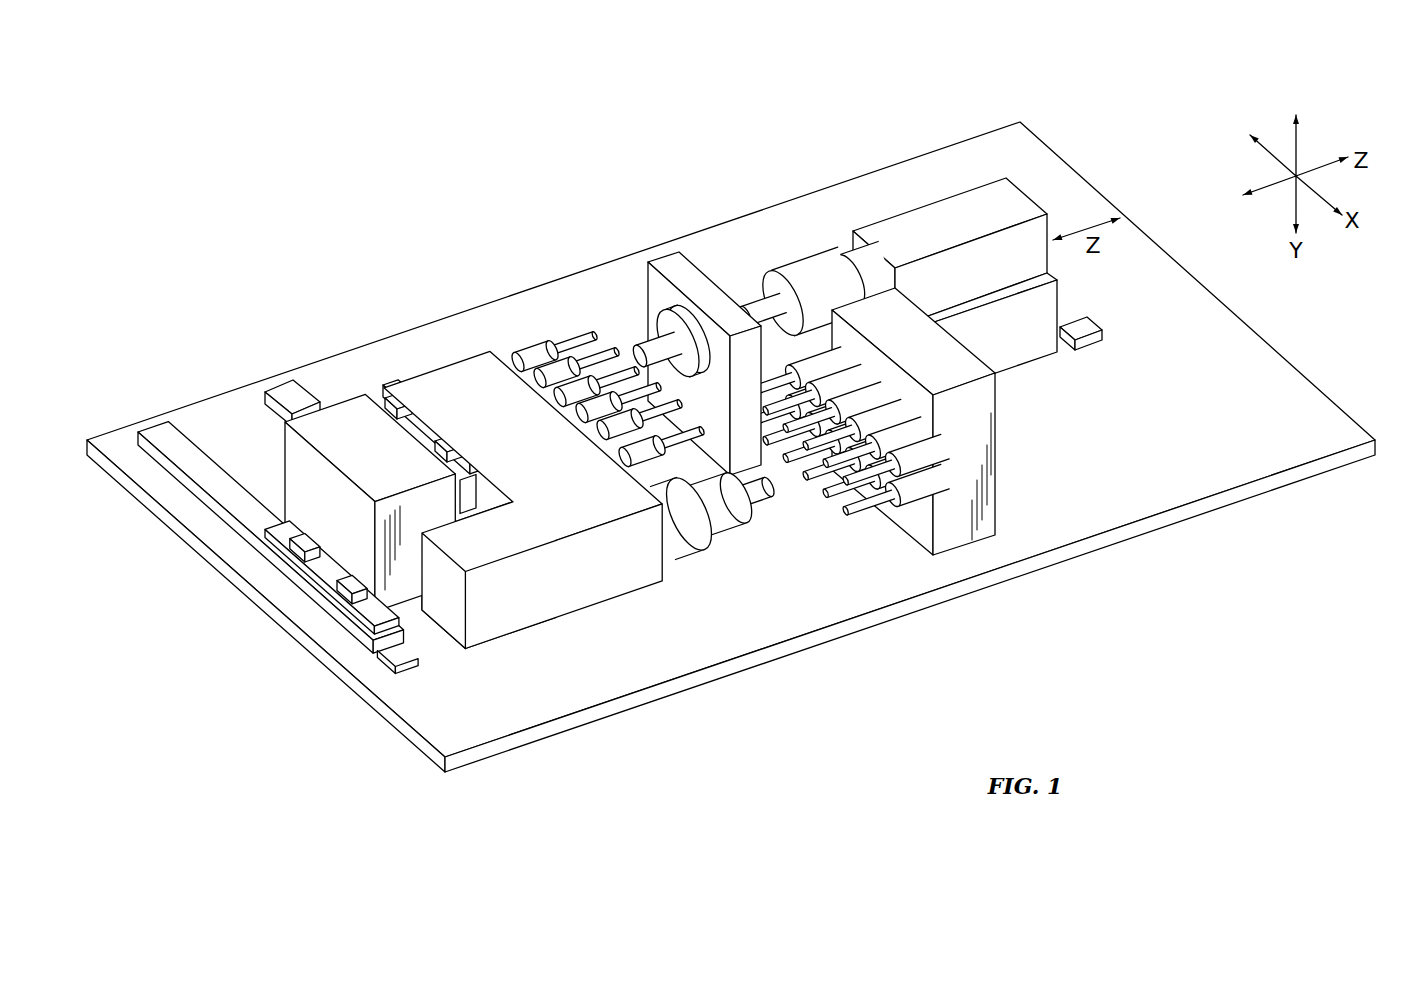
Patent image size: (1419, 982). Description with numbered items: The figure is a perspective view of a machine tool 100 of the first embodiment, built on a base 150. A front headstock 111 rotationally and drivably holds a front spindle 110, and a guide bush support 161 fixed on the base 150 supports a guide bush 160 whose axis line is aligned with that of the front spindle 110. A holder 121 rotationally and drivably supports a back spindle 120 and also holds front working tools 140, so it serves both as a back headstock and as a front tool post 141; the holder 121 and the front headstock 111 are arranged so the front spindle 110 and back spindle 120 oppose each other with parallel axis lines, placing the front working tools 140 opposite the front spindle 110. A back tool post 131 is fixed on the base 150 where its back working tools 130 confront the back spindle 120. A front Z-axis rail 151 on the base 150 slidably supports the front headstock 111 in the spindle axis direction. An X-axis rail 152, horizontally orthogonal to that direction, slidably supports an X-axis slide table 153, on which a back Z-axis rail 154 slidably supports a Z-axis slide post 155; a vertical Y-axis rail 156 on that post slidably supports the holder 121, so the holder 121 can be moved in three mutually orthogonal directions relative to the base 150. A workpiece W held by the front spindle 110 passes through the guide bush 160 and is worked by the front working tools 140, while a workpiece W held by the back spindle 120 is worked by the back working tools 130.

The machine tool 100 is at (307, 123).
The front spindle 110 is at (812, 283).
The front headstock 111 is at (943, 217).
The back spindle 120 is at (722, 518).
The holder 121 is at (547, 515).
The back working tools 130 is at (843, 497).
The back tool post 131 is at (950, 530).
The front working tools 140 is at (568, 350).
The front tool post 141 is at (478, 370).
The base 150 is at (1160, 478).
The front Z-axis rail 151 is at (1087, 330).
The X-axis rail 152 is at (152, 430).
The X-axis slide table 153 is at (380, 625).
The back Z-axis rail 154 is at (340, 598).
The Z-axis slide post 155 is at (345, 388).
The Y-axis rail 156 is at (450, 442).
The guide bush 160 is at (663, 326).
The guide bush support 161 is at (703, 290).
The workpiece W is at (657, 336).